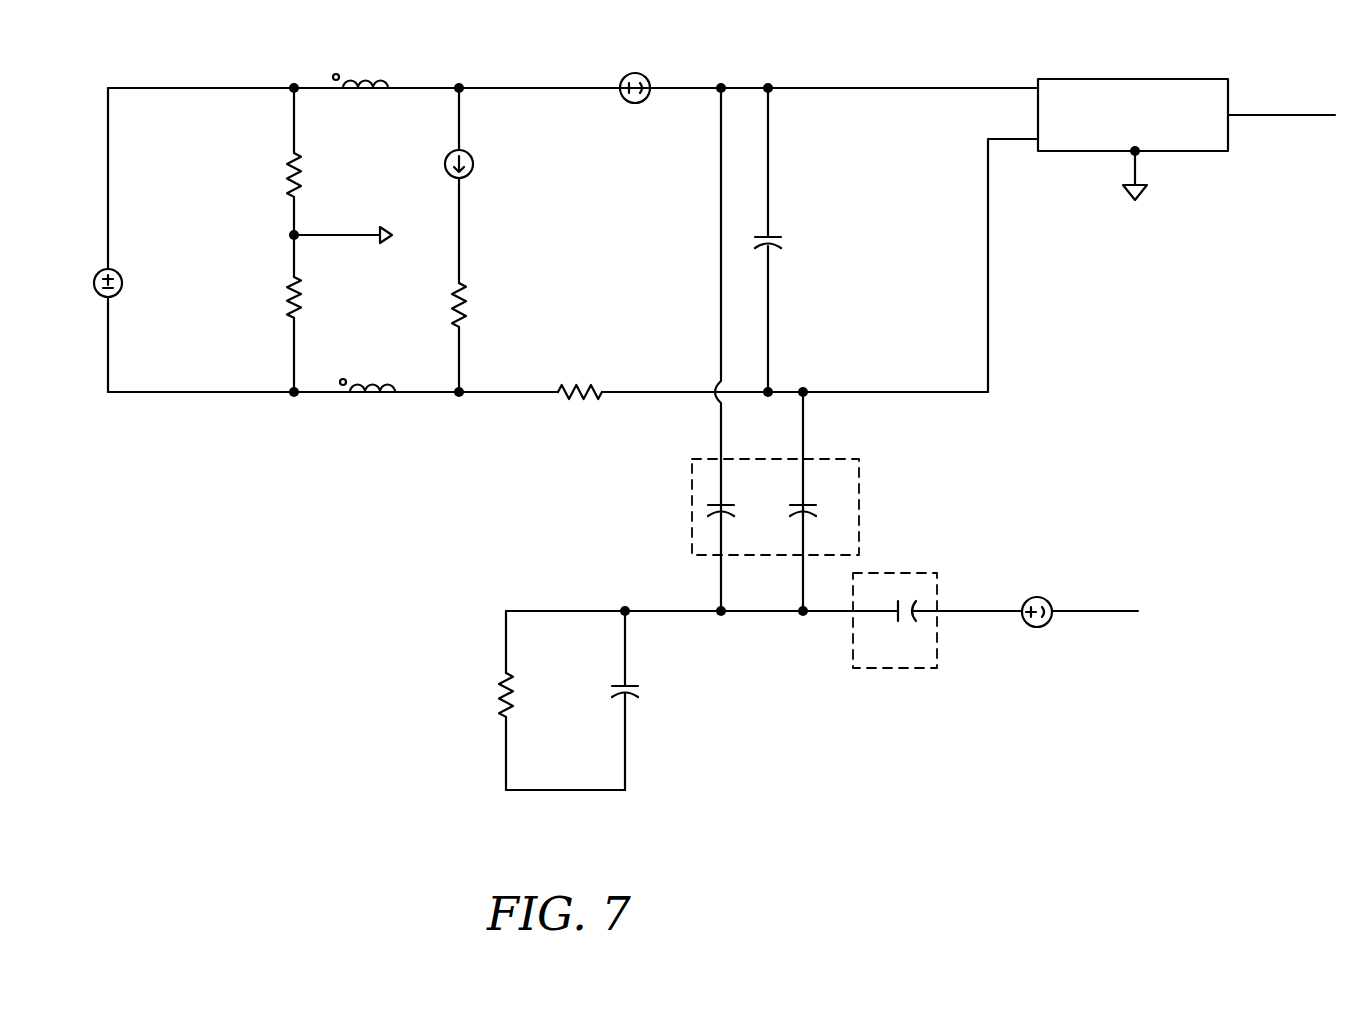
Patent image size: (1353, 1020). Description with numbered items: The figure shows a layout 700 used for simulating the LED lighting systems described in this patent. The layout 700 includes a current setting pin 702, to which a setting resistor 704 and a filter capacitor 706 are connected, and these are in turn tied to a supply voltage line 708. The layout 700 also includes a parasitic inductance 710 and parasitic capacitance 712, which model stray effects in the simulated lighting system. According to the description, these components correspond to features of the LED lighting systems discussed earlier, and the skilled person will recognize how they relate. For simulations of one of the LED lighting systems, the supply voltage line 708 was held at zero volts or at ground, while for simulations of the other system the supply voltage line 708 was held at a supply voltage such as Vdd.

The layout 700 is at (703, 432).
The current setting pin 702 is at (558, 700).
The setting resistor 704 is at (487, 692).
The filter capacitor 706 is at (633, 700).
The supply voltage line 708 is at (567, 790).
The parasitic inductance 710 is at (392, 73).
The parasitic capacitance 712 is at (859, 470).